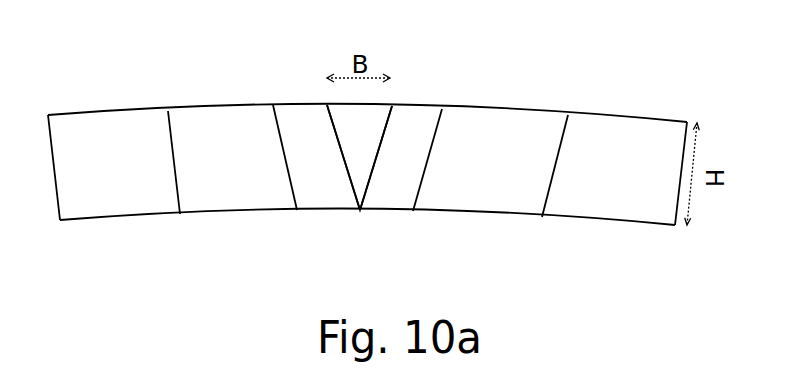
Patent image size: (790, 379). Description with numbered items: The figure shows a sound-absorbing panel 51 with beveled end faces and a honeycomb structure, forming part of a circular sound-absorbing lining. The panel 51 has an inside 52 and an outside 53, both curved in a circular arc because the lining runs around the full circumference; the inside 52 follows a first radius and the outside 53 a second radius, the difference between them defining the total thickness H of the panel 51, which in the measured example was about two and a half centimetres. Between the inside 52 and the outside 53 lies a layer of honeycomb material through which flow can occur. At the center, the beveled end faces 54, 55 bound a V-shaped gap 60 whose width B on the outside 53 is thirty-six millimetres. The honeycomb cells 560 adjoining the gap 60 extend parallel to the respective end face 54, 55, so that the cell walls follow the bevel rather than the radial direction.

The panel 51 is at (532, 110).
The inside 52 is at (230, 213).
The outside 53 is at (217, 108).
The end face 54 is at (392, 117).
The end face 55 is at (332, 117).
The gap 60 is at (365, 163).
The honeycomb cells 560 is at (328, 188).